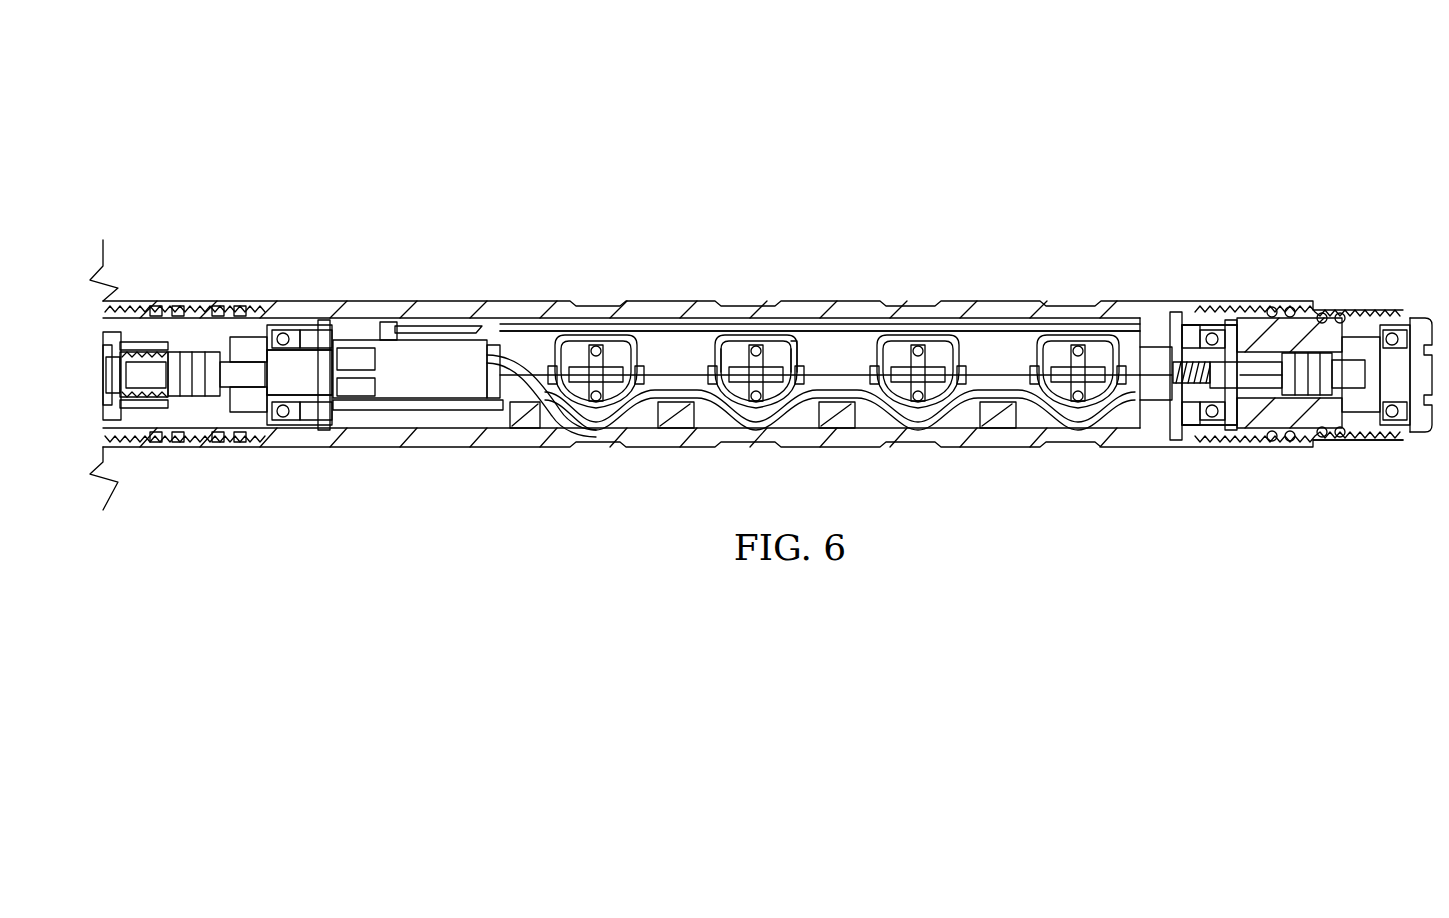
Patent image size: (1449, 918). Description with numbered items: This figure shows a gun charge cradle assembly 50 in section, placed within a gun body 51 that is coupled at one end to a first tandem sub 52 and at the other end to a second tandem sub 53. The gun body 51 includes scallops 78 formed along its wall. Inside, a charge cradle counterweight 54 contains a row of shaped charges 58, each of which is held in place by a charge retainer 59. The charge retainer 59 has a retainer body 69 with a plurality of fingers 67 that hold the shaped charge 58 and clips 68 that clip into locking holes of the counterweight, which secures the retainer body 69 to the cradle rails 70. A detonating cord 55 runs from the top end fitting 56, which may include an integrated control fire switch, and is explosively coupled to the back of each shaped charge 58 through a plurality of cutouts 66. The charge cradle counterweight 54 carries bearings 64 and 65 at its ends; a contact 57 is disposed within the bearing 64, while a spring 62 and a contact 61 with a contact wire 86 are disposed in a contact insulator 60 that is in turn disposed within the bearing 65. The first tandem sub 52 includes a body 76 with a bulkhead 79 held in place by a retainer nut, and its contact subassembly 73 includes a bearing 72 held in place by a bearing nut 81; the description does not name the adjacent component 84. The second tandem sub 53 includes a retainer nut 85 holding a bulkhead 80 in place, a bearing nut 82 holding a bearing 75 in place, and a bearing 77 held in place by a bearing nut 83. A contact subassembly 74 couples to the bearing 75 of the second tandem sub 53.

The gun charge cradle assembly 50 is at (236, 115).
The gun body 51 is at (554, 264).
The first tandem sub 52 is at (190, 446).
The second tandem sub 53 is at (1322, 440).
The charge cradle counterweight 54 is at (722, 438).
The detonating cord 55 is at (515, 367).
The top end fitting 56 is at (432, 345).
The contact 57 is at (260, 337).
The shaped charge 58 is at (608, 335).
The charge retainer 59 is at (718, 366).
The contact insulator 60 is at (1185, 360).
The contact 61 is at (1270, 362).
The spring 62 is at (1203, 425).
The bearing 64 is at (310, 350).
The bearing 65 is at (1150, 425).
The cutouts 66 is at (884, 435).
The fingers 67 is at (783, 368).
The clips 68 is at (757, 350).
The retainer body 69 is at (800, 370).
The cradle rails 70 is at (995, 372).
The bearing 72 is at (285, 420).
The contact subassembly 73 is at (238, 398).
The contact subassembly 74 is at (1152, 322).
The bearing 75 is at (1288, 420).
The body 76 is at (133, 318).
The bearing 77 is at (1392, 330).
The scallops 78 is at (932, 301).
The bulkhead 79 is at (183, 352).
The bulkhead 80 is at (1290, 365).
The bearing nut 81 is at (305, 430).
The bearing nut 82 is at (1192, 425).
The bearing nut 83 is at (1422, 432).
The seal ring 84 is at (152, 410).
The retainer nut 85 is at (1205, 362).
The contact wire 86 is at (1138, 347).